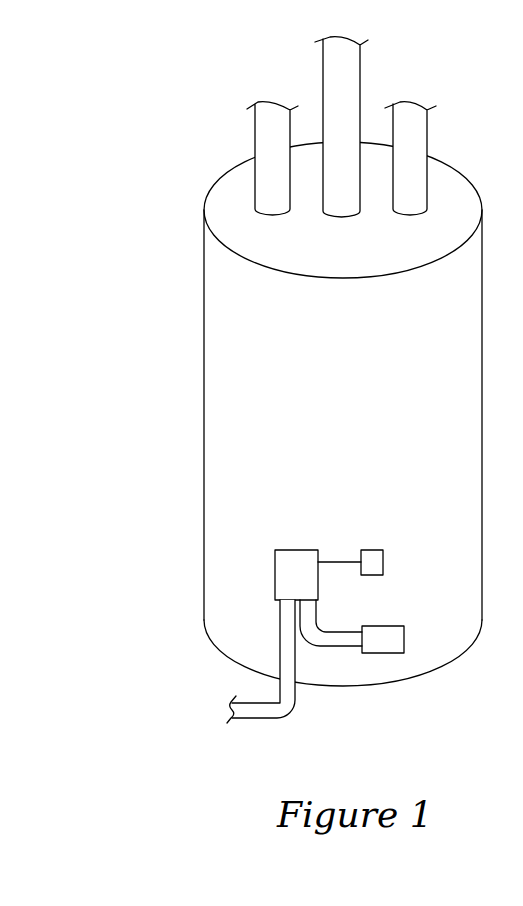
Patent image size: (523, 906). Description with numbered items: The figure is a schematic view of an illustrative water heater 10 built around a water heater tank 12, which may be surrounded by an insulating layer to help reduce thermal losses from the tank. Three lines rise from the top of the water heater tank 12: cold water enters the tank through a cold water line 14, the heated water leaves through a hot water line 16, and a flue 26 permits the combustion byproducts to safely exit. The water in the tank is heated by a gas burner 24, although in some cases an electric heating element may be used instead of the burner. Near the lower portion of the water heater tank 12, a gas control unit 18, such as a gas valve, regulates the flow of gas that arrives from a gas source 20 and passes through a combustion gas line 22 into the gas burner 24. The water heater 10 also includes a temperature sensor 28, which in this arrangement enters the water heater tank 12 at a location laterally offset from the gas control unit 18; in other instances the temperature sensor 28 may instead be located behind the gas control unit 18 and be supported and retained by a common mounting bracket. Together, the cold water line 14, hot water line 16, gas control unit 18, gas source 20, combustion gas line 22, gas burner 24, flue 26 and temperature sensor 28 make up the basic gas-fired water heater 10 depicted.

The water heater 10 is at (138, 220).
The water heater tank 12 is at (222, 423).
The cold water line 14 is at (265, 135).
The hot water line 16 is at (413, 133).
The gas control unit 18 is at (297, 557).
The gas source 20 is at (282, 709).
The combustion gas line 22 is at (336, 643).
The gas burner 24 is at (393, 632).
The flue 26 is at (343, 63).
The temperature sensor 28 is at (372, 553).